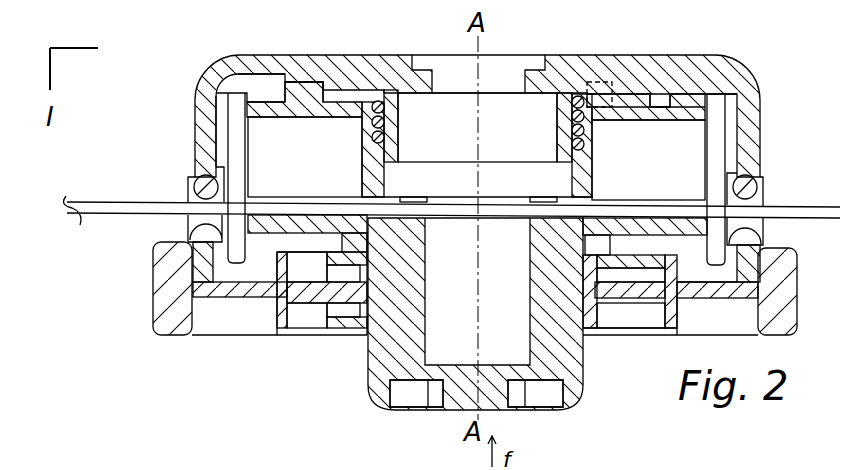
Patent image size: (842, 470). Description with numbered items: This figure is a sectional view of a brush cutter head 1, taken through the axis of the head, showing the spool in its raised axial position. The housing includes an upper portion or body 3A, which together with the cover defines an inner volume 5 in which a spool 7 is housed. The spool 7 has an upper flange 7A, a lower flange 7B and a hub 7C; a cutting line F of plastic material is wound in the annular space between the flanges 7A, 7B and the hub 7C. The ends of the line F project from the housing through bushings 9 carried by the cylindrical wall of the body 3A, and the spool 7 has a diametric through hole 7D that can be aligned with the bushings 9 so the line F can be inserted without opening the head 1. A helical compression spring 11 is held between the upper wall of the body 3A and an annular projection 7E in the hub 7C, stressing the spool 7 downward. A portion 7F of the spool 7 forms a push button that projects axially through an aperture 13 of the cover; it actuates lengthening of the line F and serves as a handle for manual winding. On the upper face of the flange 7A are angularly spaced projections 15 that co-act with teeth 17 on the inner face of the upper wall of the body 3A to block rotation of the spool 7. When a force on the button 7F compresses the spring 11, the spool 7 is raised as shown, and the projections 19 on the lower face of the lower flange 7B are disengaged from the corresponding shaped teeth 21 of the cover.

The head 1 is at (209, 369).
The body 3A is at (752, 80).
The inner volume 5 is at (218, 122).
The spool 7 is at (673, 148).
The flange 7A is at (267, 118).
The flange 7B is at (283, 231).
The hub 7C is at (586, 152).
The hole 7D is at (363, 197).
The annular projection 7E is at (383, 133).
The portion forming a push button 7F is at (373, 382).
The bushings 9 is at (200, 190).
The helical compression spring 11 is at (570, 130).
The aperture 13 is at (373, 342).
The projections 15 is at (309, 90).
The teeth 17 is at (258, 88).
The projections 19 is at (602, 245).
The teeth 21 is at (628, 312).
The cutting line F is at (797, 207).